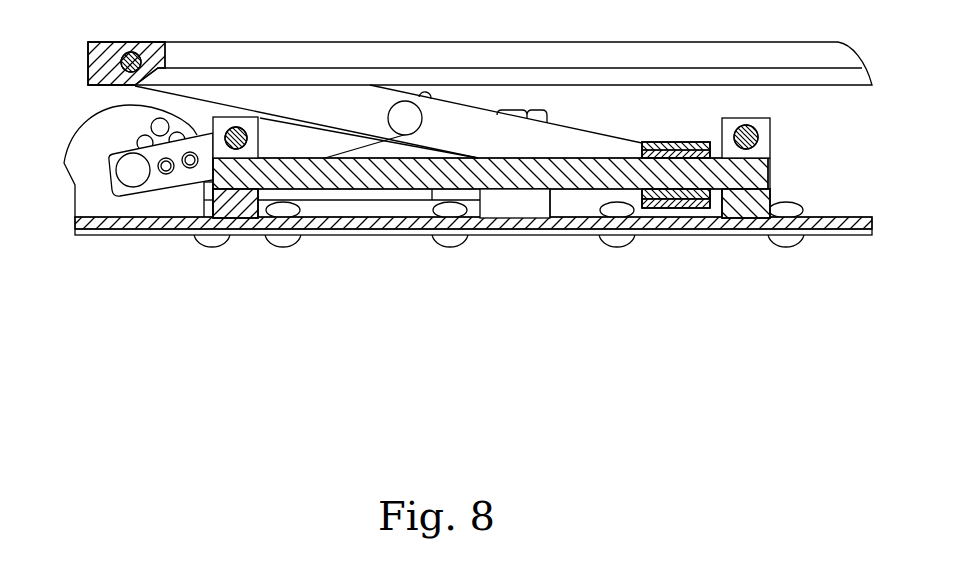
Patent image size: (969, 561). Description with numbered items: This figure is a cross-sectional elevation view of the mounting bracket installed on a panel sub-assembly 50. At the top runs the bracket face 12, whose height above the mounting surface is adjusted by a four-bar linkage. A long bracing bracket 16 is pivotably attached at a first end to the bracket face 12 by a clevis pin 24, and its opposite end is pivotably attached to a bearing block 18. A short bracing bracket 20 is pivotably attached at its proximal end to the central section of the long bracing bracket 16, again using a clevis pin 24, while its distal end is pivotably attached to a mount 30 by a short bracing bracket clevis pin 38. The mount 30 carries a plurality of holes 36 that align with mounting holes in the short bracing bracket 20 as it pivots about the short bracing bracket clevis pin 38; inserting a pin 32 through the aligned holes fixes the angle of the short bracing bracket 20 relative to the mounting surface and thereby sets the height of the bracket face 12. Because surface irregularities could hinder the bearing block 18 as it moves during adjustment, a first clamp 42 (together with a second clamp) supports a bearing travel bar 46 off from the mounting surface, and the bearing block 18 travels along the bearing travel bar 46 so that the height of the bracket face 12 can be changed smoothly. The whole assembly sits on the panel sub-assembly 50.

The bracket face 12 is at (716, 69).
The long bracing bracket 16 is at (506, 146).
The bearing block 18 is at (664, 142).
The short bracing bracket 20 is at (306, 150).
The clevis pin 24 is at (417, 128).
The mount 30 is at (109, 148).
The pin 32 is at (164, 175).
The holes 36 is at (151, 122).
The short bracing bracket clevis pin 38 is at (146, 180).
The first clamp 42 is at (770, 135).
The bearing travel bar 46 is at (410, 190).
The panel sub-assembly 50 is at (103, 237).